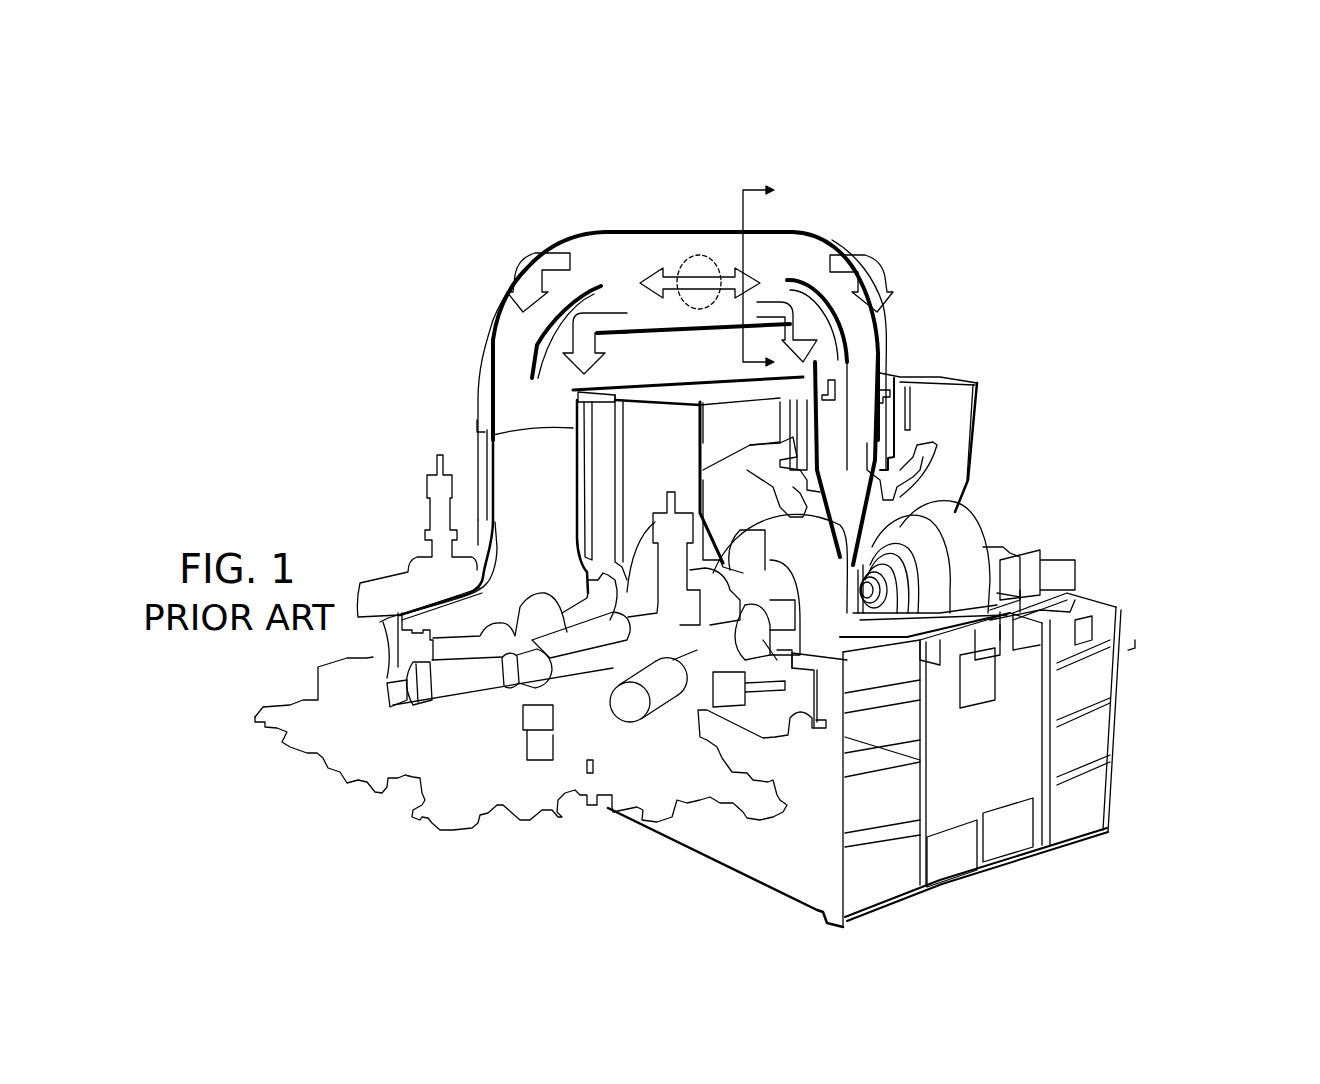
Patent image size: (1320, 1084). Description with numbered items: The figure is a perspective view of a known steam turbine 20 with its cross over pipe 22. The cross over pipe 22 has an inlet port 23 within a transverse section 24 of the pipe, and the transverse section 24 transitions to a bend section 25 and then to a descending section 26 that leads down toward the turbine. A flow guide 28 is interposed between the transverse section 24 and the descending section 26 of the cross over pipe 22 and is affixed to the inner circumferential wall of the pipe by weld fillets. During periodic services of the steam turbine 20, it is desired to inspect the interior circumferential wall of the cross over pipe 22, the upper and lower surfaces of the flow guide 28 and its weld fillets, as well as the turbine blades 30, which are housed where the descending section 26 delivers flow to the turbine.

The steam turbine 20 is at (1185, 670).
The cross over pipe 22 is at (515, 205).
The inlet port 23 is at (710, 258).
The transverse section 24 is at (650, 240).
The bend section 25 is at (537, 330).
The descending section 26 is at (485, 403).
The flow guide 28 is at (530, 328).
The turbine blades 30 is at (955, 512).